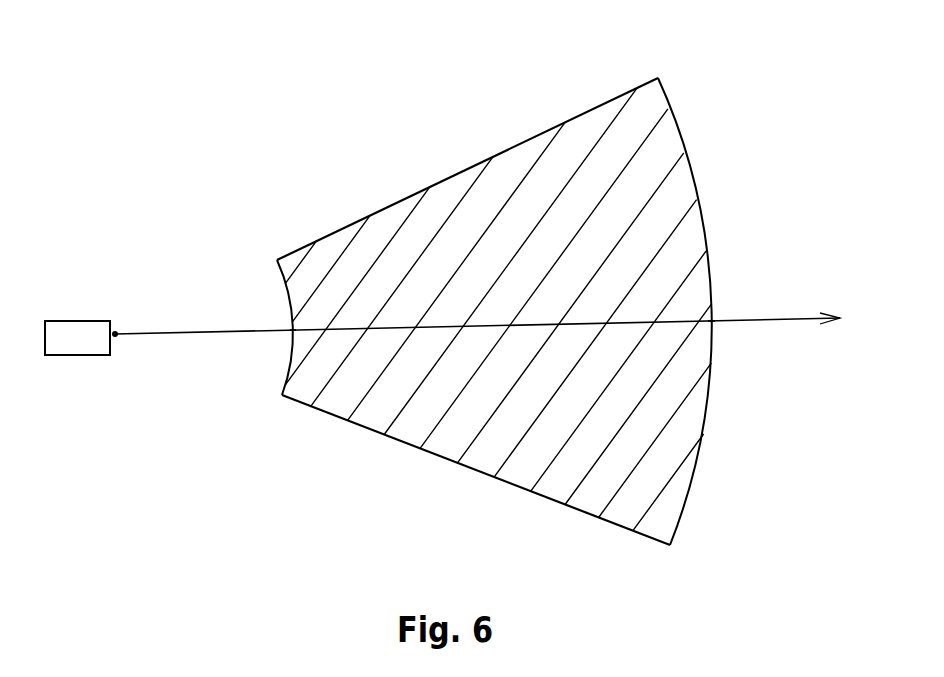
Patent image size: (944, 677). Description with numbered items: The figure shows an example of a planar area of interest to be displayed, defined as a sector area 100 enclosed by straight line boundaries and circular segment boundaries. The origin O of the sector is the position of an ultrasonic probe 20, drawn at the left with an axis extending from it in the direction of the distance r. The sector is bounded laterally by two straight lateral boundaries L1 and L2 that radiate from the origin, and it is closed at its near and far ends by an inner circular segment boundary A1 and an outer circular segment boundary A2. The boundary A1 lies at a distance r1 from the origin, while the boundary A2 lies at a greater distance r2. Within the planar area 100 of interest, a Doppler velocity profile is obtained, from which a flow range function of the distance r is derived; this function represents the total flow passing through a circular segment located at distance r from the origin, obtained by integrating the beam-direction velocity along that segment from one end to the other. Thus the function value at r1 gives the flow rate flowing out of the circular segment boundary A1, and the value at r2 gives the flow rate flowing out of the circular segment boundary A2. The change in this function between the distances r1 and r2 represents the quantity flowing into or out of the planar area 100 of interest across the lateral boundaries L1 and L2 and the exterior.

The planar area of interest 100 is at (498, 280).
The ultrasonic probe 20 is at (73, 357).
The lateral boundary L1 is at (473, 158).
The lateral boundary L2 is at (533, 493).
The circular segment boundary A1 is at (288, 374).
The circular segment boundary A2 is at (690, 489).
The distance r1 is at (278, 347).
The distance r2 is at (724, 336).
The distance r is at (483, 330).